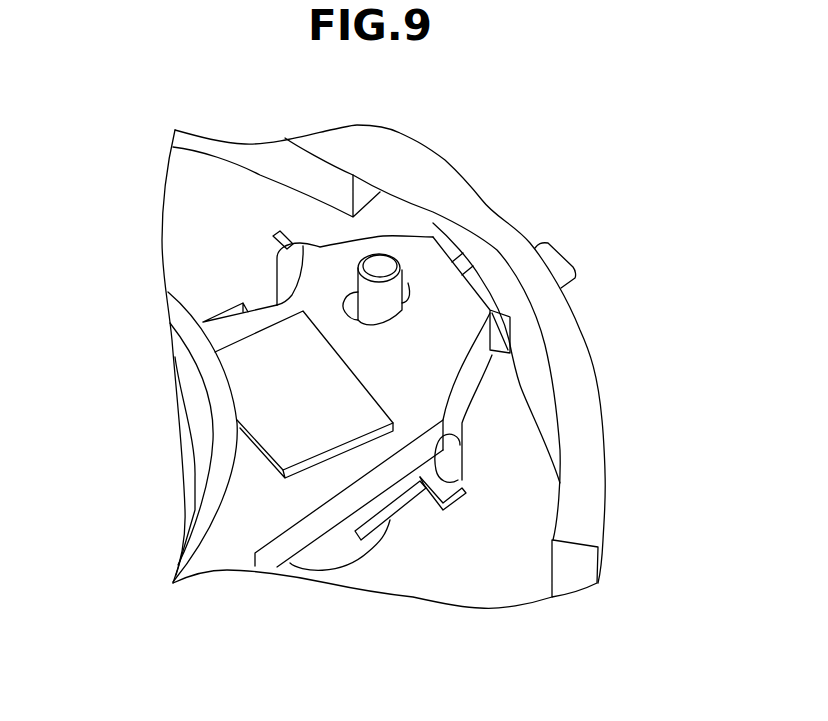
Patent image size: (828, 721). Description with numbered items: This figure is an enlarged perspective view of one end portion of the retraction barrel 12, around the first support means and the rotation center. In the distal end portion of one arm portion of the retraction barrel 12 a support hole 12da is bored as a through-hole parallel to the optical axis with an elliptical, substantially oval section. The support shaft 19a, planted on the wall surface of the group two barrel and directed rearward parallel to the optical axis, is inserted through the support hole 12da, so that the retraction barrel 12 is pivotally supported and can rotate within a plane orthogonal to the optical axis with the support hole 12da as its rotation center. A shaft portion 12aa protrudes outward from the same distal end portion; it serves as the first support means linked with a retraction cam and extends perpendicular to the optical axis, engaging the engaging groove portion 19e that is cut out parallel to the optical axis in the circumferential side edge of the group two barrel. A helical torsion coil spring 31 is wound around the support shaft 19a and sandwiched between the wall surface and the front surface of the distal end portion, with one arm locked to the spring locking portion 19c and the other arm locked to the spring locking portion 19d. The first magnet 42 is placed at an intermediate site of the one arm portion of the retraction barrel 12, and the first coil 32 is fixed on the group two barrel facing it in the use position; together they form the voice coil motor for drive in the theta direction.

The retraction barrel 12 is at (258, 513).
The shaft portion 12aa is at (545, 247).
The support hole 12da is at (410, 292).
The support shaft 19a is at (380, 262).
The spring locking portion 19c is at (290, 265).
The spring locking portion 19d is at (452, 465).
The engaging groove portion 19e is at (497, 326).
The helical torsion coil spring 31 is at (275, 233).
The first coil 32 is at (340, 537).
The first magnet 42 is at (272, 388).